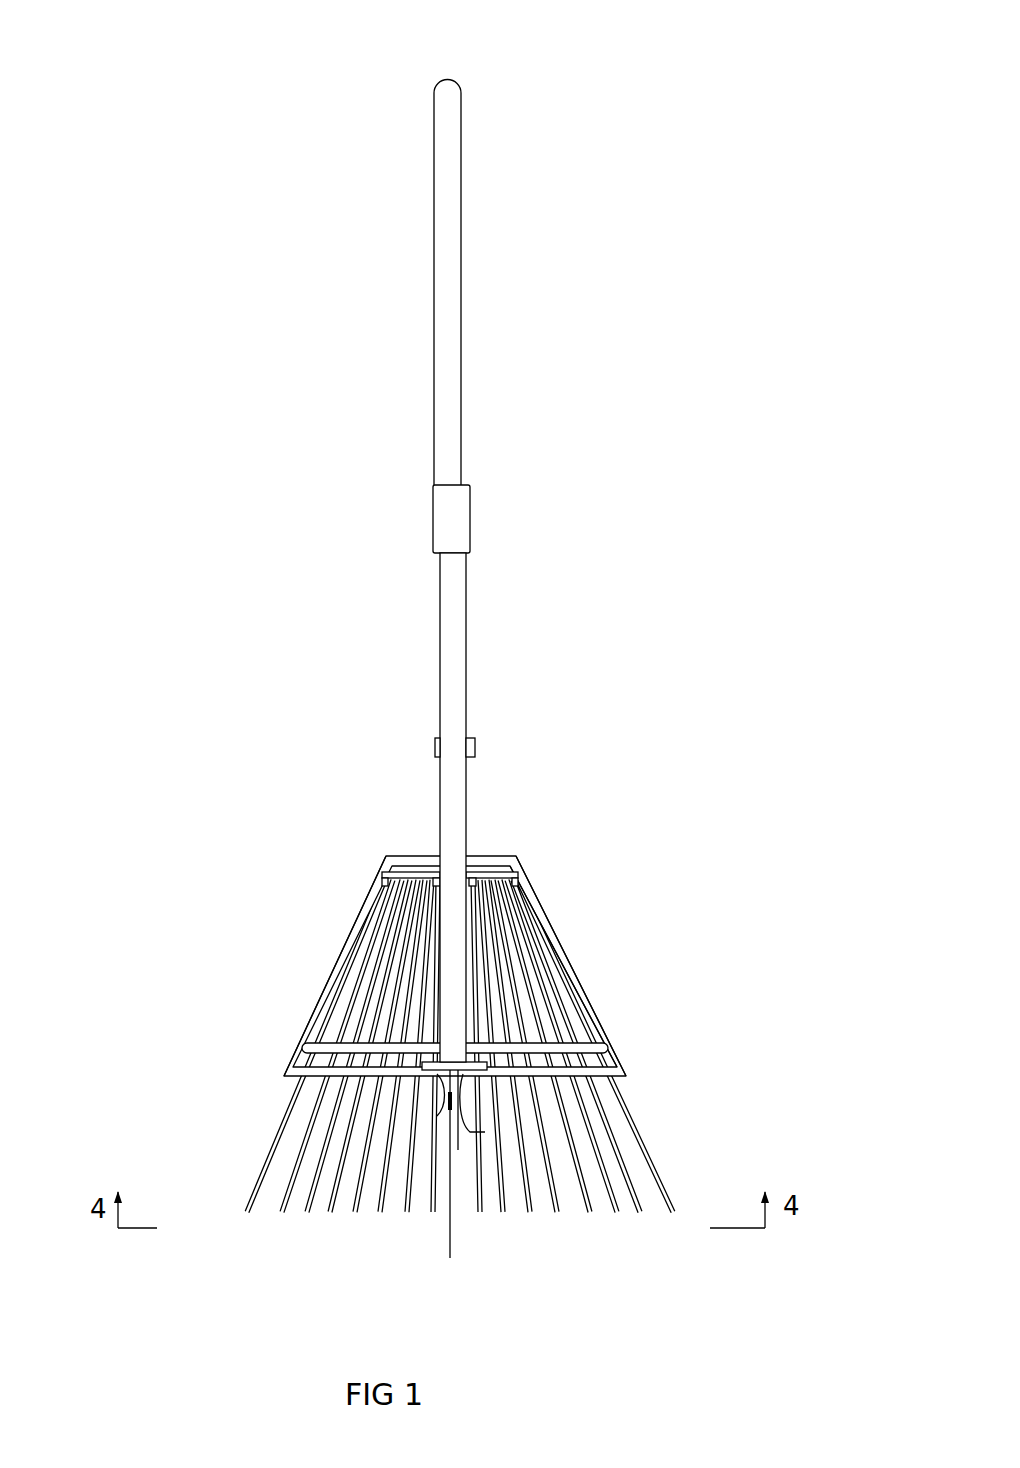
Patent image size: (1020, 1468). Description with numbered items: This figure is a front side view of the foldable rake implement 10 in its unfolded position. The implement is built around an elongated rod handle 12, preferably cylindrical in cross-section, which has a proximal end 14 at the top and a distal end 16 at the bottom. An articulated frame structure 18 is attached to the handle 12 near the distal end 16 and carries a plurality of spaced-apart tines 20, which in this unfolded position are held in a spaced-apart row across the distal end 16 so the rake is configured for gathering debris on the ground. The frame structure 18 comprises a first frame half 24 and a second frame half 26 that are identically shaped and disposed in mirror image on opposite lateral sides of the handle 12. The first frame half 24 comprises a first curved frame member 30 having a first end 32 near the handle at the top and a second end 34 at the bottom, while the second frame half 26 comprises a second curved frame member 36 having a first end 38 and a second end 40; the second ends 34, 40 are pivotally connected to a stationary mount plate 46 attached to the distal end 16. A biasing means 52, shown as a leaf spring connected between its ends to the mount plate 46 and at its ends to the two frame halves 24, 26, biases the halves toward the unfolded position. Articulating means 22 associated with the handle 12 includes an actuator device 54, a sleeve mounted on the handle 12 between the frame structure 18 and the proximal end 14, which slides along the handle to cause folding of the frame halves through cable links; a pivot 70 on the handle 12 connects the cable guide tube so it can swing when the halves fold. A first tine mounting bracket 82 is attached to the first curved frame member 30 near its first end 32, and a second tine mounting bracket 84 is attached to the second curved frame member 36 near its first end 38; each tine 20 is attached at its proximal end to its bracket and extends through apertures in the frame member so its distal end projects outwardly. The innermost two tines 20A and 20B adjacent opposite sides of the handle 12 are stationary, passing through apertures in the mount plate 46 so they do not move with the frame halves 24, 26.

The foldable rake implement 10 is at (652, 48).
The elongated rod handle 12 is at (463, 200).
The proximal end 14 is at (461, 90).
The distal end 16 is at (454, 1181).
The articulated frame structure 18 is at (598, 926).
The tines 20 is at (310, 1183).
The innermost tine 20A is at (432, 1205).
The innermost tine 20B is at (482, 1205).
The articulating means 22 is at (582, 572).
The first frame half 24 is at (322, 975).
The second frame half 26 is at (572, 907).
The first curved frame member 30 is at (372, 890).
The first end 32 is at (434, 850).
The second end 34 is at (437, 1082).
The second curved frame member 36 is at (536, 897).
The first end 38 is at (470, 850).
The second end 40 is at (475, 1080).
The stationary mount plate 46 is at (462, 1080).
The biasing means 52 is at (330, 1047).
The actuator device 54 is at (474, 492).
The pivot 70 is at (477, 738).
The first tine mounting bracket 82 is at (383, 870).
The second tine mounting bracket 84 is at (521, 870).